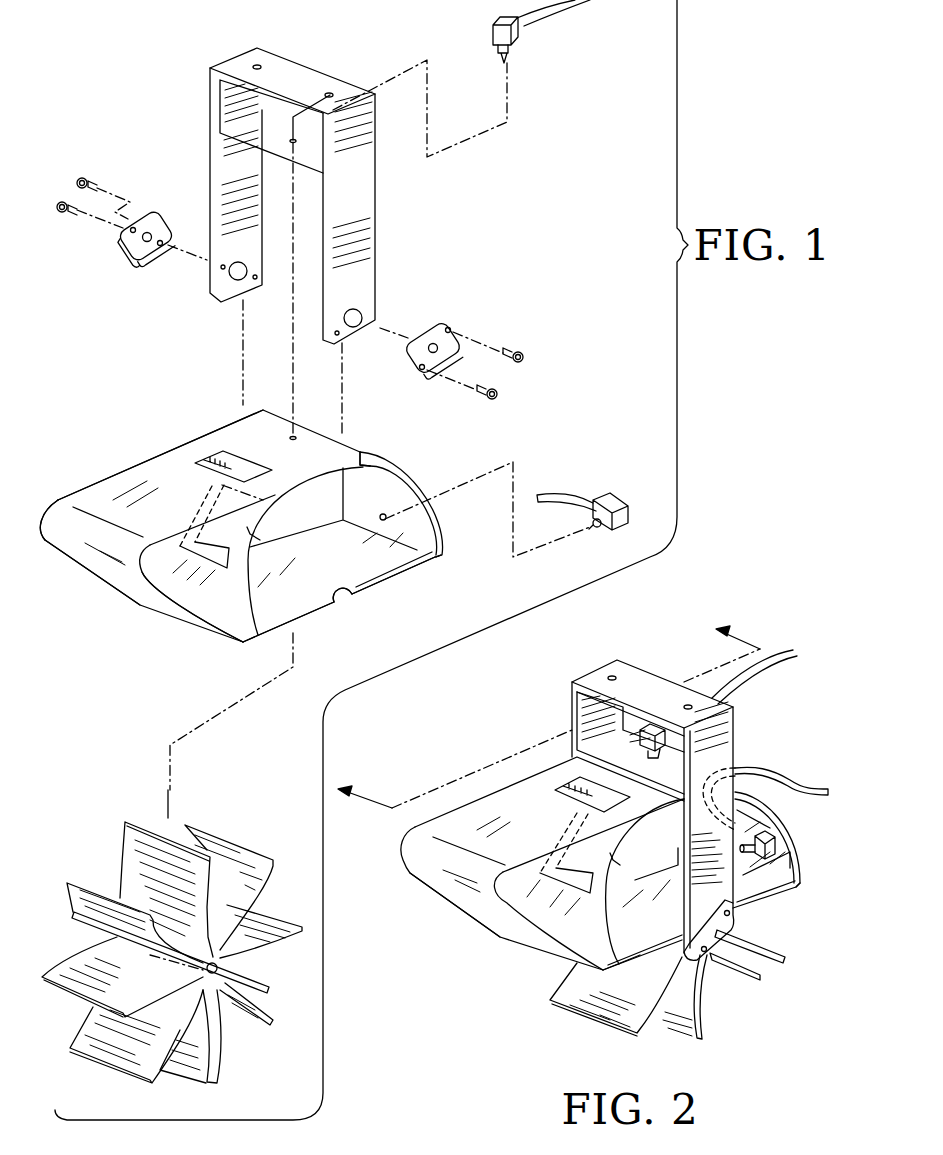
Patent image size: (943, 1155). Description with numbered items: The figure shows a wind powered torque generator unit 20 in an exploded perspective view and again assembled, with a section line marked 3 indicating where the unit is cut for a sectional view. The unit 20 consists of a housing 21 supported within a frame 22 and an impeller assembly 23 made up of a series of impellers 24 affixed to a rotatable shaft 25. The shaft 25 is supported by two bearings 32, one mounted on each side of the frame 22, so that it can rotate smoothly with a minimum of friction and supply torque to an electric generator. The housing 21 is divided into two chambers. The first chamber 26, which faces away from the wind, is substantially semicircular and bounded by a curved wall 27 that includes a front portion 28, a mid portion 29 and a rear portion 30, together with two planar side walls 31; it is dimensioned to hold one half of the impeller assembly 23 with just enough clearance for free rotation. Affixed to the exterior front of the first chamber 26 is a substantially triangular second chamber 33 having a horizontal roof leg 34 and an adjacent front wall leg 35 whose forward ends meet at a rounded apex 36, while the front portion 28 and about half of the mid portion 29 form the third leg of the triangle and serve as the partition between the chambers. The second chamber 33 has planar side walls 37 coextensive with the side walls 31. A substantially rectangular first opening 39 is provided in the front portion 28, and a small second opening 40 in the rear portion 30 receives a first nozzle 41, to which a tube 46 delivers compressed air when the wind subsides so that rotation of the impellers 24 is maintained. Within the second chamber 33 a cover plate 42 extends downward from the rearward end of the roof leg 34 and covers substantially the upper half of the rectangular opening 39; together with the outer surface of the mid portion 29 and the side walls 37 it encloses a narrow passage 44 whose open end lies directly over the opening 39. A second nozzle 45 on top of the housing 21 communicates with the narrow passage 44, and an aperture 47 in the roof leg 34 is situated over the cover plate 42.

In FIG. 2, the section line 3- 3 is at (549, 706).
In FIG. 1, the wind powered torque generator unit 20 is at (145, 38).
In FIG. 2, the wind powered torque generator unit 20 is at (515, 708).
In FIG. 1, the housing 21 is at (258, 533).
In FIG. 2, the housing 21 is at (620, 882).
In FIG. 1, the frame 22 is at (362, 192).
In FIG. 2, the frame 22 is at (596, 675).
In FIG. 1, the impeller assembly 23 is at (172, 934).
In FIG. 1, the impellers 24 is at (105, 968).
In FIG. 2, the impellers 24 is at (697, 1000).
In FIG. 1, the rotatable shaft 25 is at (240, 970).
In FIG. 2, the rotatable shaft 25 is at (770, 967).
In FIG. 1, the first chamber 26 is at (363, 570).
In FIG. 1, the curved wall 27 is at (427, 485).
In FIG. 2, the curved wall 27 is at (766, 850).
In FIG. 1, the front portion 28 is at (210, 633).
In FIG. 2, the front portion 28 is at (567, 930).
In FIG. 1, the mid portion 29 is at (363, 462).
In FIG. 1, the rear portion 30 is at (443, 537).
In FIG. 2, the planar side walls 31 is at (790, 862).
In FIG. 1, the bearings 32 is at (433, 320).
In FIG. 2, the bearings 32 is at (728, 910).
In FIG. 1, the second chamber 33 is at (190, 590).
In FIG. 1, the roof leg 34 is at (97, 480).
In FIG. 1, the front wall leg 35 is at (123, 580).
In FIG. 1, the apex 36 is at (58, 533).
In FIG. 2, the planar side walls 37 is at (545, 920).
In FIG. 1, the first opening 39 is at (258, 636).
In FIG. 1, the second opening 40 is at (385, 519).
In FIG. 1, the first nozzle 41 is at (615, 502).
In FIG. 2, the first nozzle 41 is at (770, 830).
In FIG. 1, the cover plate 42 is at (187, 472).
In FIG. 1, the narrow passage 44 is at (333, 590).
In FIG. 1, the second nozzle 45 is at (515, 32).
In FIG. 2, the tube 46 is at (772, 773).
In FIG. 1, the aperture 47 is at (230, 467).
In FIG. 2, the aperture 47 is at (592, 794).